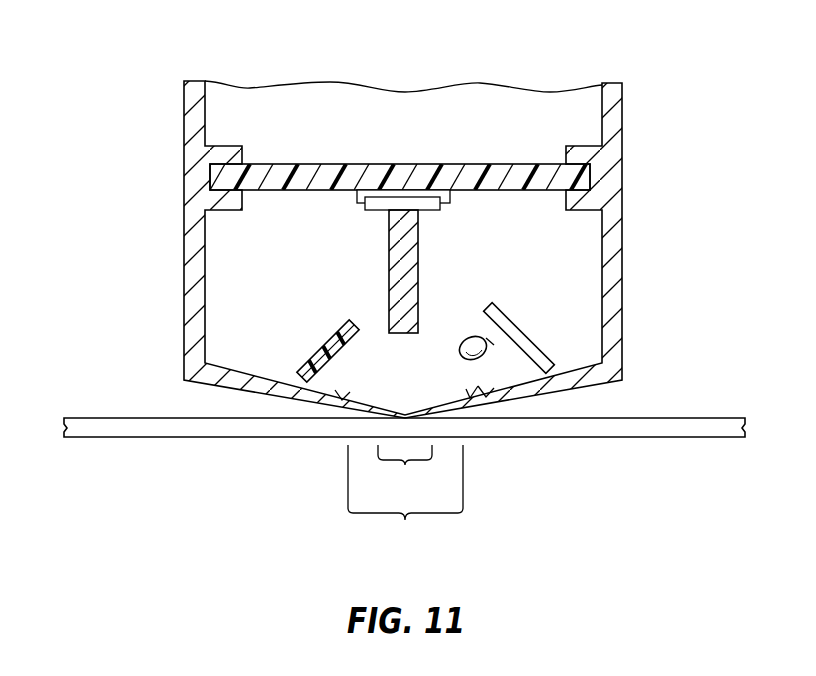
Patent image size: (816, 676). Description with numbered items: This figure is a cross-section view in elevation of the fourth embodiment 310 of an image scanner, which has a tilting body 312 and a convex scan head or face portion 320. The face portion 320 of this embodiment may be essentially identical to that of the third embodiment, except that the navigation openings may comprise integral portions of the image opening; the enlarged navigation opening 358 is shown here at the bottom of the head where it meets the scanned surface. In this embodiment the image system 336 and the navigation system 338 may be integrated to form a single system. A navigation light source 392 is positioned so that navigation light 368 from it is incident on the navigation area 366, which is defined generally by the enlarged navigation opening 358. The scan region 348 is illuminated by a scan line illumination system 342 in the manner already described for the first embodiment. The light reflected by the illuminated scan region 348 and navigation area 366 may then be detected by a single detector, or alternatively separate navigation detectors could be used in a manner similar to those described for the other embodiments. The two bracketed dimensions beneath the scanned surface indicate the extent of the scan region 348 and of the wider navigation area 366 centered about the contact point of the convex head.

The fourth embodiment 310 is at (133, 45).
The tilting body 312 is at (488, 75).
The convex scan head 320 is at (622, 147).
The image system 336 is at (345, 245).
The navigation system 338 is at (468, 238).
The scan line illumination system 342 is at (340, 337).
The navigation light source 392 is at (470, 337).
The navigation light 368 is at (437, 387).
The navigation opening 358 is at (500, 397).
The scan region 348 is at (405, 474).
The navigation area 366 is at (405, 501).